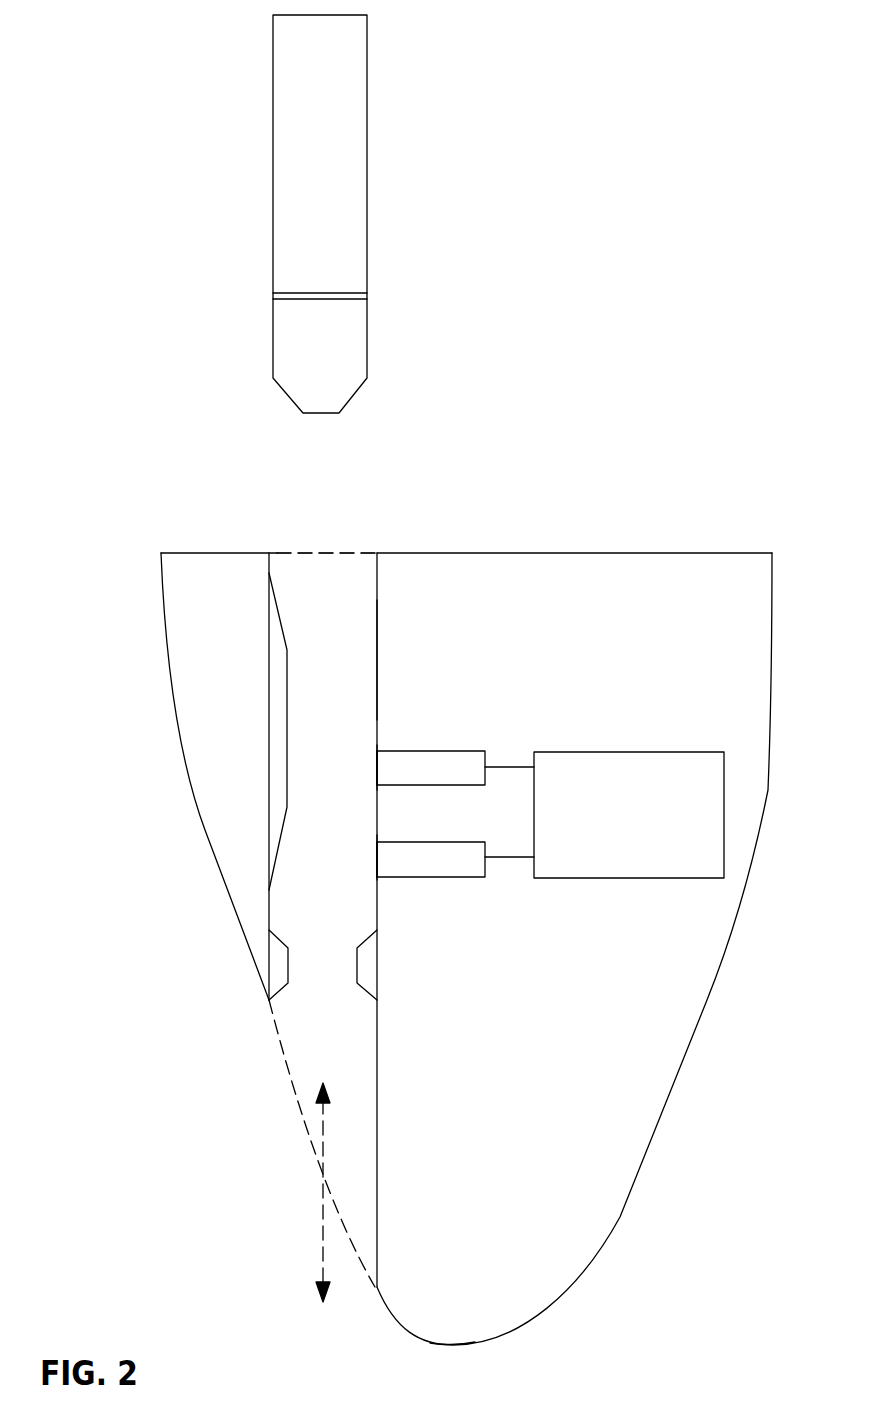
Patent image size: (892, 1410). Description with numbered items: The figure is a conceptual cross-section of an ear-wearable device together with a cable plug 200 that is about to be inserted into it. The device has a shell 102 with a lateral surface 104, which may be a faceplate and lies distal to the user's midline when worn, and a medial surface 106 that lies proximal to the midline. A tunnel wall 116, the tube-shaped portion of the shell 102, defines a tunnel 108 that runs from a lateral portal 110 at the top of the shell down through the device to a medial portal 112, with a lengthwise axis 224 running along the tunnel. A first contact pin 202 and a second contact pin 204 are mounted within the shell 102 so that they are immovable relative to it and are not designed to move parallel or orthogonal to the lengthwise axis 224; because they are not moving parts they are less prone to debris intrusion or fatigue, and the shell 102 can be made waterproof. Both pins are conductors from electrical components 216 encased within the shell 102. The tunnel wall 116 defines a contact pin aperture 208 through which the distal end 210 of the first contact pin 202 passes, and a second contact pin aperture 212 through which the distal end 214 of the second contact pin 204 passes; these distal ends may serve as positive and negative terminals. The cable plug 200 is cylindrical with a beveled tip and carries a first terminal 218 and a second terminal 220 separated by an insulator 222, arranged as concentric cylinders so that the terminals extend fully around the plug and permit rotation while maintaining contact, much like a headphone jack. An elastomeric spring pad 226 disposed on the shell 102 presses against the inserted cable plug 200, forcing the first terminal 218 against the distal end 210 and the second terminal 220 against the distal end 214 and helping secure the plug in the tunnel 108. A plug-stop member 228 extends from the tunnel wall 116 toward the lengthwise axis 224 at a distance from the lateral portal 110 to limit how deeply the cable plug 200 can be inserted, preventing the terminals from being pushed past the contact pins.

The cable plug 200 is at (376, 214).
The first terminal 218 is at (367, 250).
The insulator 222 is at (367, 296).
The second terminal 220 is at (367, 340).
The shell 102 is at (498, 920).
The lateral surface 104 is at (632, 552).
The medial surface 106 is at (472, 1345).
The lateral portal 110 is at (362, 877).
The tunnel 108 is at (333, 583).
The tunnel wall 116 is at (377, 673).
The elastomeric spring pad 226 is at (283, 635).
The plug-stop member 228 is at (371, 998).
The first contact pin 202 is at (413, 749).
The second contact pin 204 is at (413, 878).
The electrical components 216 is at (663, 752).
The contact pin aperture 208 is at (375, 765).
The distal end of contact pin 210 is at (376, 778).
The second contact pin aperture 212 is at (372, 857).
The distal end of contact pin 214 is at (376, 848).
The medial portal 112 is at (307, 1145).
The lengthwise axis 224 is at (322, 1225).